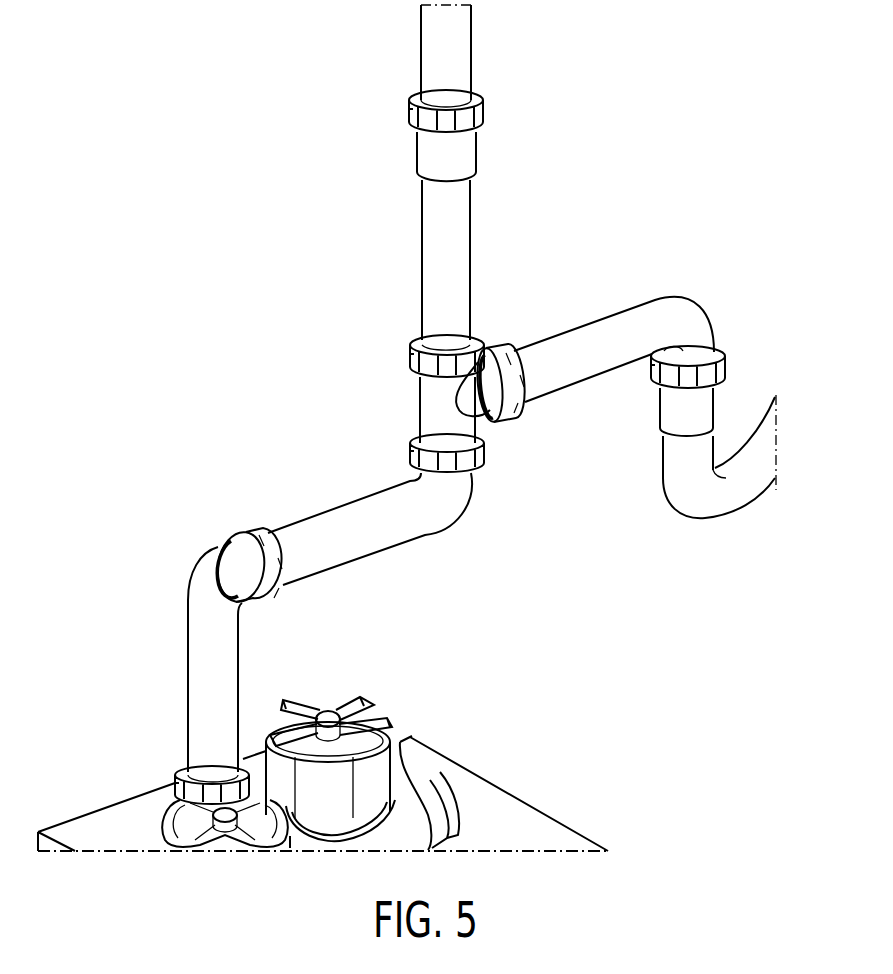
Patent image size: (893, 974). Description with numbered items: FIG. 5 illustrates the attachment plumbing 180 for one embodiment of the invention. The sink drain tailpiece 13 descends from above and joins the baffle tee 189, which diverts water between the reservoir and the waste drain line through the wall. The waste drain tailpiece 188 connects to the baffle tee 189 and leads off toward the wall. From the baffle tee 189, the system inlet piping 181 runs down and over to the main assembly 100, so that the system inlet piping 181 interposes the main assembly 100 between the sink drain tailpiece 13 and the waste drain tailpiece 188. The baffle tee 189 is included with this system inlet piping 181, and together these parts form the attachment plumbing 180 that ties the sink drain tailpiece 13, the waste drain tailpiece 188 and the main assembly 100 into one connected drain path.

The sink drain tailpiece 13 is at (436, 50).
The main assembly 100 is at (510, 792).
The drain plumbing assembly 180 is at (212, 246).
The system inlet piping 181 is at (200, 586).
The waste drain tailpiece 188 is at (618, 316).
The baffle tee 189 is at (437, 403).